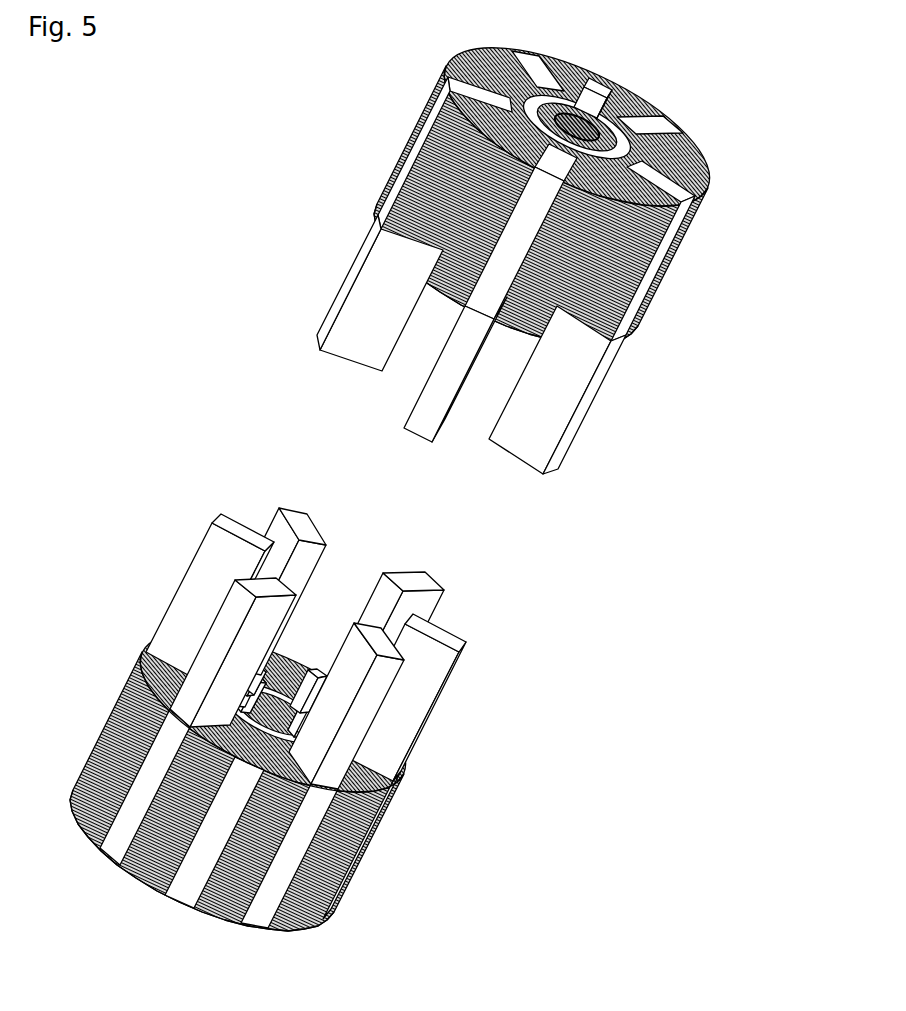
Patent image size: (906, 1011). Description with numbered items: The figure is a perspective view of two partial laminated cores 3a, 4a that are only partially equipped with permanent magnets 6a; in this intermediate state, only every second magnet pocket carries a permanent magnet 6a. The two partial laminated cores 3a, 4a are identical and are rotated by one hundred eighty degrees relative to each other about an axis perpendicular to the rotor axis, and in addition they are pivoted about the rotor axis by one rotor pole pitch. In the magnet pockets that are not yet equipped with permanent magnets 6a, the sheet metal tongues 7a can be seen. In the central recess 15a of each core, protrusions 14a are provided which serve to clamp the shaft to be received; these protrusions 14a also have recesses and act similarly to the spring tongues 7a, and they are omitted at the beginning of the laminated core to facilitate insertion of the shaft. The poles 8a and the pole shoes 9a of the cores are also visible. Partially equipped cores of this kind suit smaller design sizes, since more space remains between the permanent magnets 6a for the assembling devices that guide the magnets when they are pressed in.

The partial laminated core 3a is at (695, 80).
The partial laminated core 4a is at (538, 646).
The permanent magnet 6a is at (546, 415).
The sheet metal tongue 7a is at (190, 873).
The pole 8a is at (417, 113).
The pole shoe 9a is at (430, 283).
The protrusion 14a is at (600, 86).
The central recess 15a is at (655, 122).